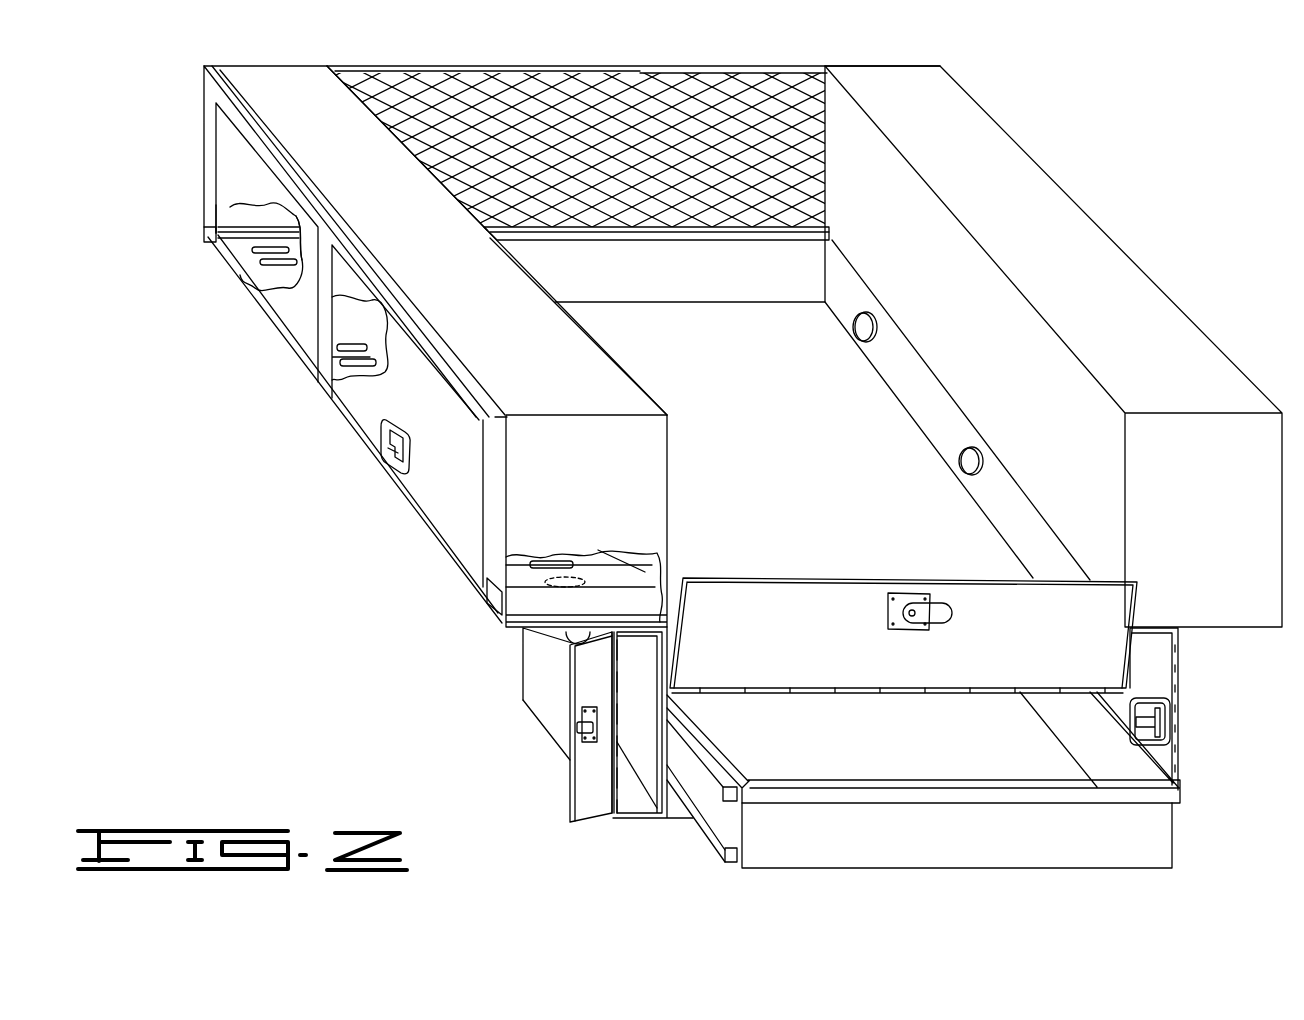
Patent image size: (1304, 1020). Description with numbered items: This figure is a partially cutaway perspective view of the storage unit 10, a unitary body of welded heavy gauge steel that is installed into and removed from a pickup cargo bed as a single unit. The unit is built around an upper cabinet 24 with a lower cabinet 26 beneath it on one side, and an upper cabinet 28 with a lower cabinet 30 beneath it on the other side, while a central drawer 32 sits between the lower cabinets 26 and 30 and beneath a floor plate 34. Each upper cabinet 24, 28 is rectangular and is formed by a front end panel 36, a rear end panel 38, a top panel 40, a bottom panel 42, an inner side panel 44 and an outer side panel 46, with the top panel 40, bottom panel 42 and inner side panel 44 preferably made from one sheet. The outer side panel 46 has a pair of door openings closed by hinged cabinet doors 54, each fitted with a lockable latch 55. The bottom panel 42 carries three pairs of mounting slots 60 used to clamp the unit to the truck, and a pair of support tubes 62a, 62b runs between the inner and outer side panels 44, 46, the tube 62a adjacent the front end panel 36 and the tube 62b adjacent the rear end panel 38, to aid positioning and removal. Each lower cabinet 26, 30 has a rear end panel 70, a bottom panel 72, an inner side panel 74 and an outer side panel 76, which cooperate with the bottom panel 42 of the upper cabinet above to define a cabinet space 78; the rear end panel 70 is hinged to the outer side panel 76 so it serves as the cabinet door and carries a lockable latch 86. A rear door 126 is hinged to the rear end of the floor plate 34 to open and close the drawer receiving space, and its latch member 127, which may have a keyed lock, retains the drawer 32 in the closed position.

The storage unit 10 is at (1012, 135).
The upper cabinet 24 is at (417, 518).
The lower cabinet 26 is at (538, 660).
The upper cabinet 28 is at (1150, 280).
The lower cabinet 30 is at (1178, 668).
The central drawer 32 is at (908, 850).
The floor plate 34 is at (858, 395).
The front end panel 36 is at (228, 215).
The rear end panel 38 is at (640, 470).
The top panel 40 is at (592, 365).
The bottom panel 42 is at (262, 277).
The inner side panel 44 is at (643, 550).
The outer side panel 46 is at (323, 362).
The cabinet doors 54 is at (300, 325).
The lockable latch 55 is at (393, 467).
The mounting slots 60 is at (262, 262).
The support tube 62a is at (237, 238).
The support tube 62b is at (518, 603).
The rear end panel 70 is at (595, 805).
The bottom panel 72 is at (632, 798).
The inner side panel 74 is at (642, 745).
The outer side panel 76 is at (545, 693).
The cabinet space 78 is at (642, 663).
The lockable latch 86 is at (578, 730).
The rear door 126 is at (828, 575).
The latch member 127 is at (935, 620).